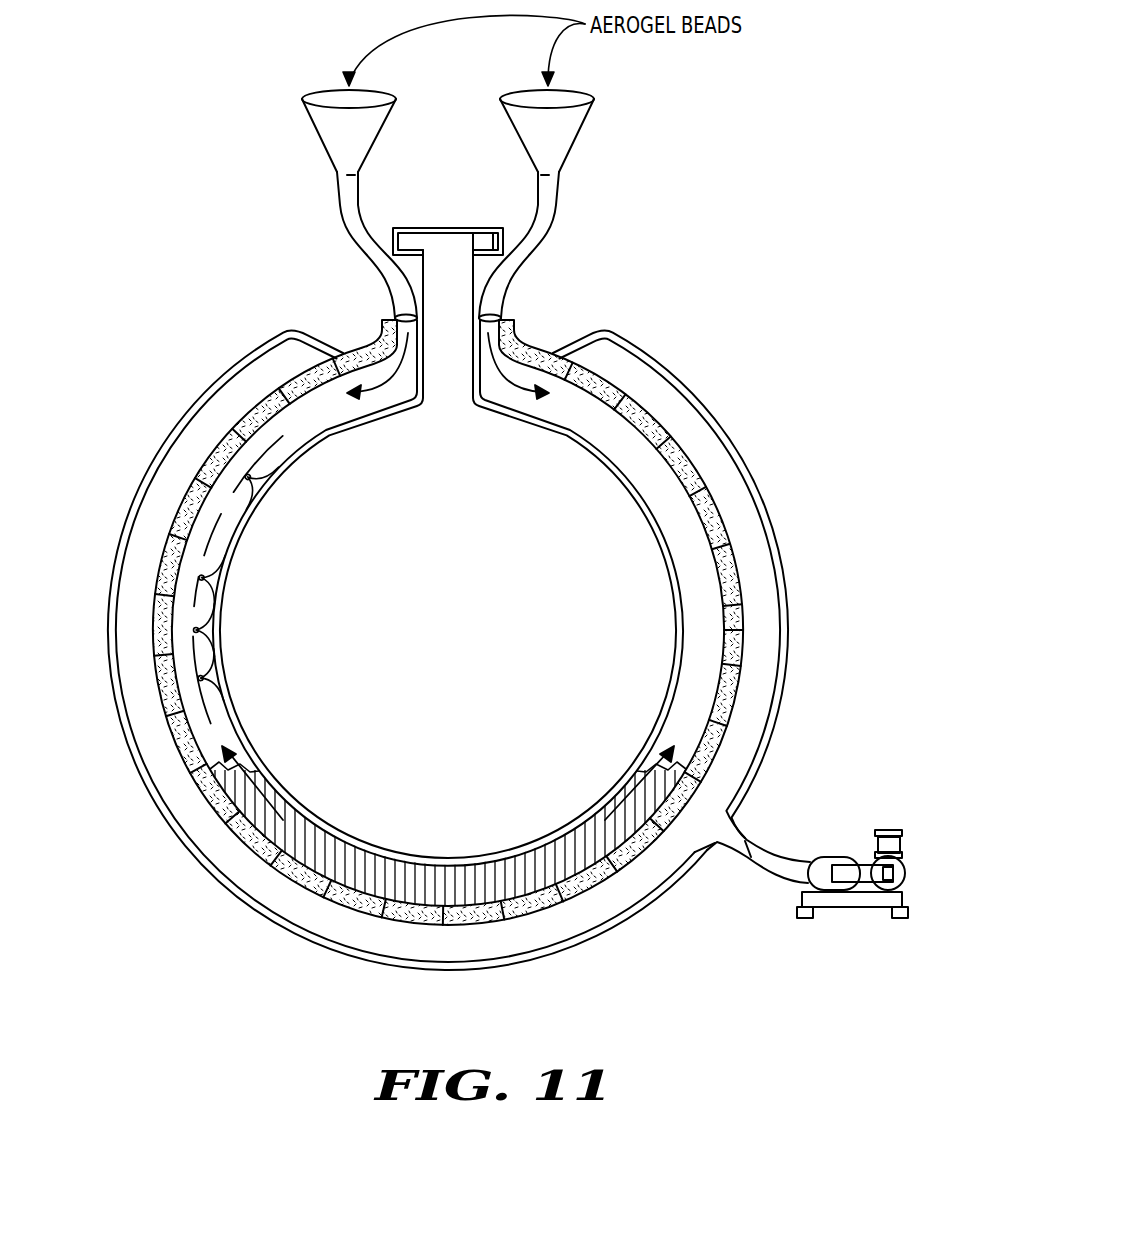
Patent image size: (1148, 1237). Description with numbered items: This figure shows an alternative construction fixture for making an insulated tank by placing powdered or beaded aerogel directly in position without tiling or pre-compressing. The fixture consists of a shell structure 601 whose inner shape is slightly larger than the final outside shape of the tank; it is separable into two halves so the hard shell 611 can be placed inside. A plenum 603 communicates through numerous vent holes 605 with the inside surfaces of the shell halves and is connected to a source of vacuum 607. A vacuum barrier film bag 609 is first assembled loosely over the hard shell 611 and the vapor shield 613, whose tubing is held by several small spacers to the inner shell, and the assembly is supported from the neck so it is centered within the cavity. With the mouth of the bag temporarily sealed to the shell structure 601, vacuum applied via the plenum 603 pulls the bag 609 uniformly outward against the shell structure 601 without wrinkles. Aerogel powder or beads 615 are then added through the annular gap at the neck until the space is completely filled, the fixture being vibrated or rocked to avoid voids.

The shell structure 601 is at (653, 417).
The plenum 603 is at (752, 458).
The vent holes 605 is at (727, 543).
The source of vacuum 607 is at (853, 910).
The vacuum barrier film bag 609 is at (585, 390).
The hard shell 611 is at (685, 610).
The vapor shield 613 is at (250, 480).
The aerogel powder or beads 615 is at (372, 865).